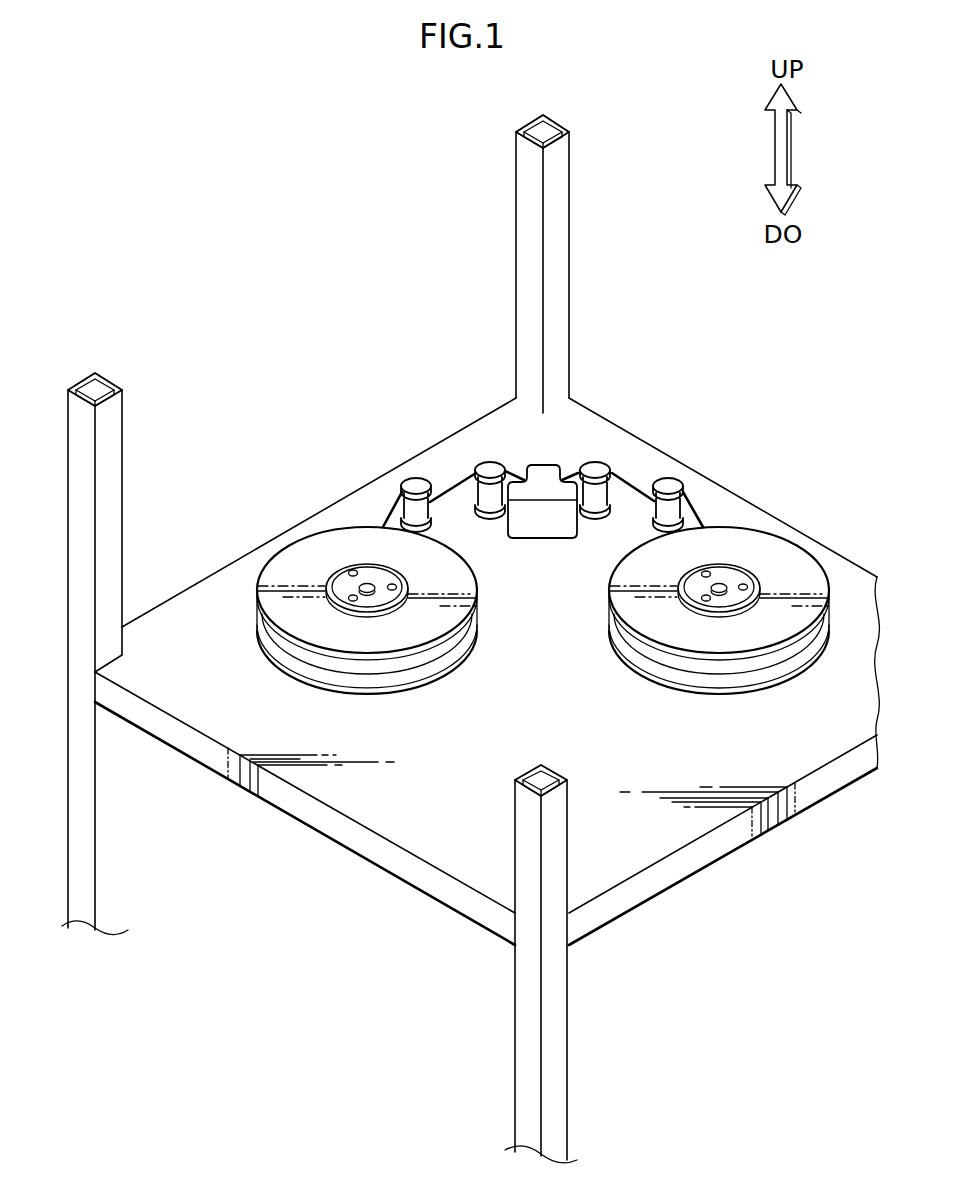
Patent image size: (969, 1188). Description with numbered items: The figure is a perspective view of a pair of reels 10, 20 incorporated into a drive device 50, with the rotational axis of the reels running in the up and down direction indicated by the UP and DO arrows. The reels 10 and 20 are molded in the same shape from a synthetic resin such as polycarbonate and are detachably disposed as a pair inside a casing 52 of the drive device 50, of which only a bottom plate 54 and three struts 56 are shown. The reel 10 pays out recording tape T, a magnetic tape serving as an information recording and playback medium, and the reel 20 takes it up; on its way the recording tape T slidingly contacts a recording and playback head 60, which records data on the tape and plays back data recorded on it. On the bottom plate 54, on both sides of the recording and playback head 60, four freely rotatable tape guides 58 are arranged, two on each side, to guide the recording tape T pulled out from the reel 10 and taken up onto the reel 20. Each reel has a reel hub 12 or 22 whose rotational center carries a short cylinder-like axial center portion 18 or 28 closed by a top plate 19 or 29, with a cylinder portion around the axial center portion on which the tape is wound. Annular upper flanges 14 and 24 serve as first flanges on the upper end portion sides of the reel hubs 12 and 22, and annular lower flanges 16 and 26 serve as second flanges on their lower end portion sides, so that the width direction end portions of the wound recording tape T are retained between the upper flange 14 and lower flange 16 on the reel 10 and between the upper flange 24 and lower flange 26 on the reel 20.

The reel 10 is at (768, 531).
The reel hub 12 is at (690, 560).
The upper flange 14 is at (800, 568).
The lower flange 16 is at (813, 657).
The axial center portion 18 is at (722, 598).
The top plate 19 is at (693, 592).
The reel 20 is at (319, 525).
The reel hub 22 is at (338, 570).
The upper flange 24 is at (290, 566).
The lower flange 26 is at (272, 658).
The axial center portion 28 is at (373, 598).
The top plate 29 is at (405, 590).
The drive device 50 is at (498, 396).
The casing 52 is at (292, 820).
The bottom plate 54 is at (385, 820).
The struts 56 is at (558, 215).
The tape guides 58 is at (490, 470).
The recording and playback head 60 is at (545, 472).
The recording tape T is at (706, 520).